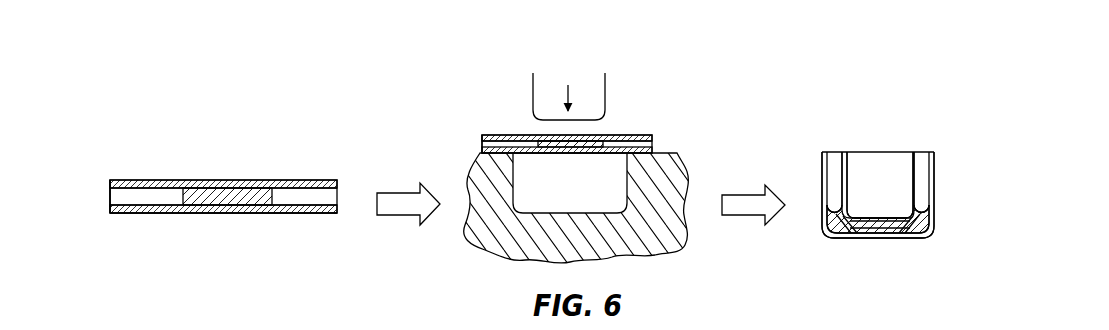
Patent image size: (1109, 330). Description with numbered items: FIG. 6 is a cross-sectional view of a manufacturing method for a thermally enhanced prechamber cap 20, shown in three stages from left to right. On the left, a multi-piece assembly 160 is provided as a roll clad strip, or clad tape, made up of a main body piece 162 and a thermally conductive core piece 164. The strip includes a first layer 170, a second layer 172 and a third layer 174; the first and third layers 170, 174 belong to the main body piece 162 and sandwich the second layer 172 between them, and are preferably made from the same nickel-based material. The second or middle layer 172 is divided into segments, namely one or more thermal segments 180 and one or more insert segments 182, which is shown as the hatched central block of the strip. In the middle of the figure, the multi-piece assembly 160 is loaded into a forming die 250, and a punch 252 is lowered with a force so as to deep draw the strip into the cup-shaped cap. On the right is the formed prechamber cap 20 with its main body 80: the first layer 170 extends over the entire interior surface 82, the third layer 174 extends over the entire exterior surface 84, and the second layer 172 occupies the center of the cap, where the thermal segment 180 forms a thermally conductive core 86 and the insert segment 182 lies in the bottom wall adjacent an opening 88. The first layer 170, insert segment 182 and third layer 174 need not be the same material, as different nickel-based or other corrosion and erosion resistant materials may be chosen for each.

The thermally enhanced prechamber cap 20 is at (953, 182).
The main body 80 is at (853, 225).
The interior surface 82 is at (843, 176).
The exterior surface 84 is at (820, 200).
The thermally conductive core 86 is at (926, 172).
The opening 88 is at (920, 225).
The multi-piece assembly 160 is at (195, 147).
The main body piece 162 is at (283, 217).
The thermally conductive core piece 164 is at (102, 194).
The first layer 170 is at (240, 182).
The second layer 172 is at (480, 142).
The third layer 174 is at (253, 212).
The thermal segment 180 is at (152, 192).
The insert segment 182 is at (203, 205).
The forming die 250 is at (688, 205).
The punch 252 is at (596, 90).